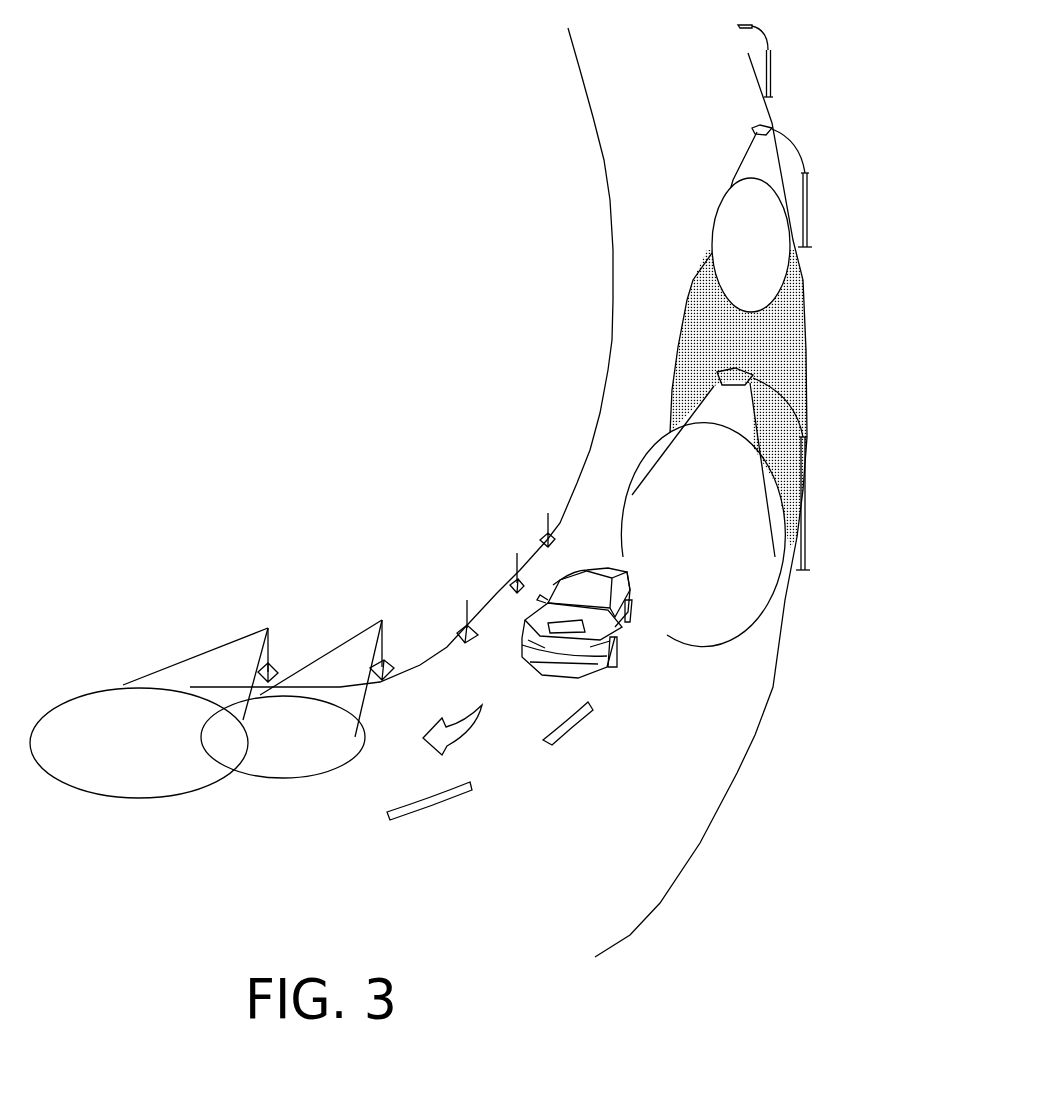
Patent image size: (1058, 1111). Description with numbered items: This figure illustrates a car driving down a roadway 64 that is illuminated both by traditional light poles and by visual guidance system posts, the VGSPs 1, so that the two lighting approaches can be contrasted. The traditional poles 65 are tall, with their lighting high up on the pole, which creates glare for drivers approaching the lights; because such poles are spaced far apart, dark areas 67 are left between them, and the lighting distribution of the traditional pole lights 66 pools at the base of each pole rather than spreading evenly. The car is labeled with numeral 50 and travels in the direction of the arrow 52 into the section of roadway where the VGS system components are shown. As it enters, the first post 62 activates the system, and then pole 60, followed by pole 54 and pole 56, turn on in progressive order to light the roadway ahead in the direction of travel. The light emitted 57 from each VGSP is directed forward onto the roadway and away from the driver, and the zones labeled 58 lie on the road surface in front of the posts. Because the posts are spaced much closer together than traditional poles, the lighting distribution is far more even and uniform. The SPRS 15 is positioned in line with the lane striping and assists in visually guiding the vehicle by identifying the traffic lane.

The VGSP 1 is at (462, 602).
The SPRS 15 is at (593, 707).
The vehicle 50 is at (627, 623).
The arrow 52 is at (458, 737).
The pole 54 is at (382, 620).
The pole 56 is at (268, 628).
The light emitted 57 is at (210, 648).
The detection zone 58 is at (225, 753).
The pole 60 is at (517, 553).
The first post 62 is at (550, 512).
The roadway 64 is at (652, 265).
The traditional pole 65 is at (807, 195).
The lighting distribution of traditional pole lights 66 is at (732, 218).
The dark area 67 is at (780, 340).